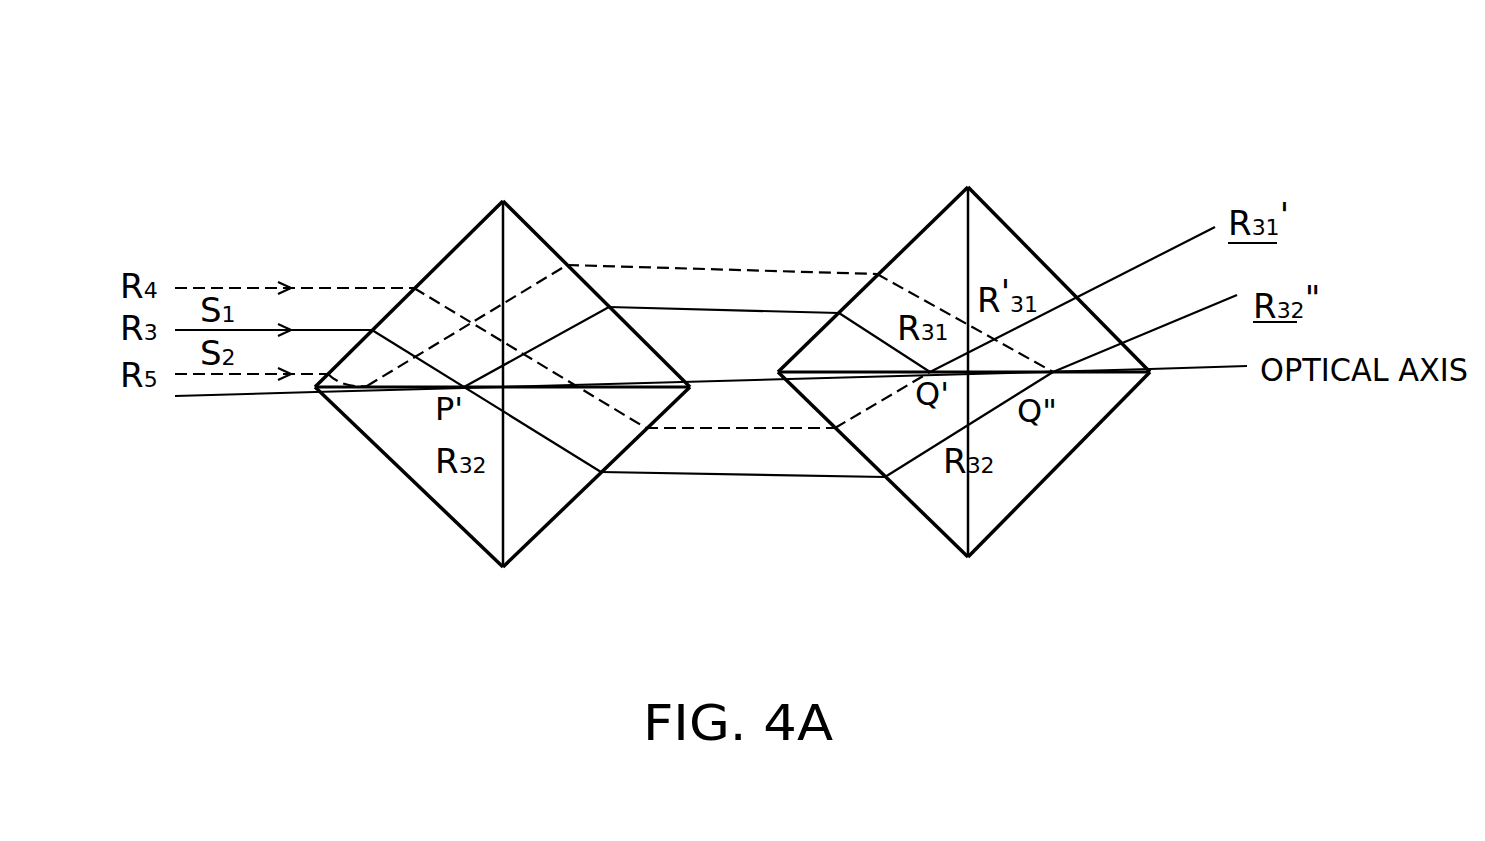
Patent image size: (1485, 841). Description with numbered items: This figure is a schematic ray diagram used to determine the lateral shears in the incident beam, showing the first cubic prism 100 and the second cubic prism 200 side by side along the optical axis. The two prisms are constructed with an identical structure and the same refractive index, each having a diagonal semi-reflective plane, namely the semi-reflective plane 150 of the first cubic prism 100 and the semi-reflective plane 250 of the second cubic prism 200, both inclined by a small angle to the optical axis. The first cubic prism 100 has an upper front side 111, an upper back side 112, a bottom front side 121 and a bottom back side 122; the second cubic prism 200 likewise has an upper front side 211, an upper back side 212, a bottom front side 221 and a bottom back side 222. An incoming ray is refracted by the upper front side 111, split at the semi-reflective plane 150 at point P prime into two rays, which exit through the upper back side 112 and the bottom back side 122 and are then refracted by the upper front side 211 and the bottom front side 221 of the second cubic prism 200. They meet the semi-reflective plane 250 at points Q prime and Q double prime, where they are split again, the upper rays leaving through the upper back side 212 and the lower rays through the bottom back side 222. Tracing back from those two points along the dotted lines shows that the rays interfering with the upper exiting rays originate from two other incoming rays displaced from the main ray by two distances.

The first cubic prism 100 is at (503, 176).
The upper front side 111 is at (460, 241).
The upper back side 112 is at (547, 241).
The bottom front side 121 is at (477, 546).
The bottom back side 122 is at (530, 544).
The semi-reflective plane 150 is at (253, 426).
The second cubic prism 200 is at (962, 160).
The upper front side 211 is at (930, 223).
The upper back side 212 is at (997, 217).
The bottom front side 221 is at (932, 526).
The bottom back side 222 is at (1002, 524).
The semi-reflective plane 250 is at (1198, 390).